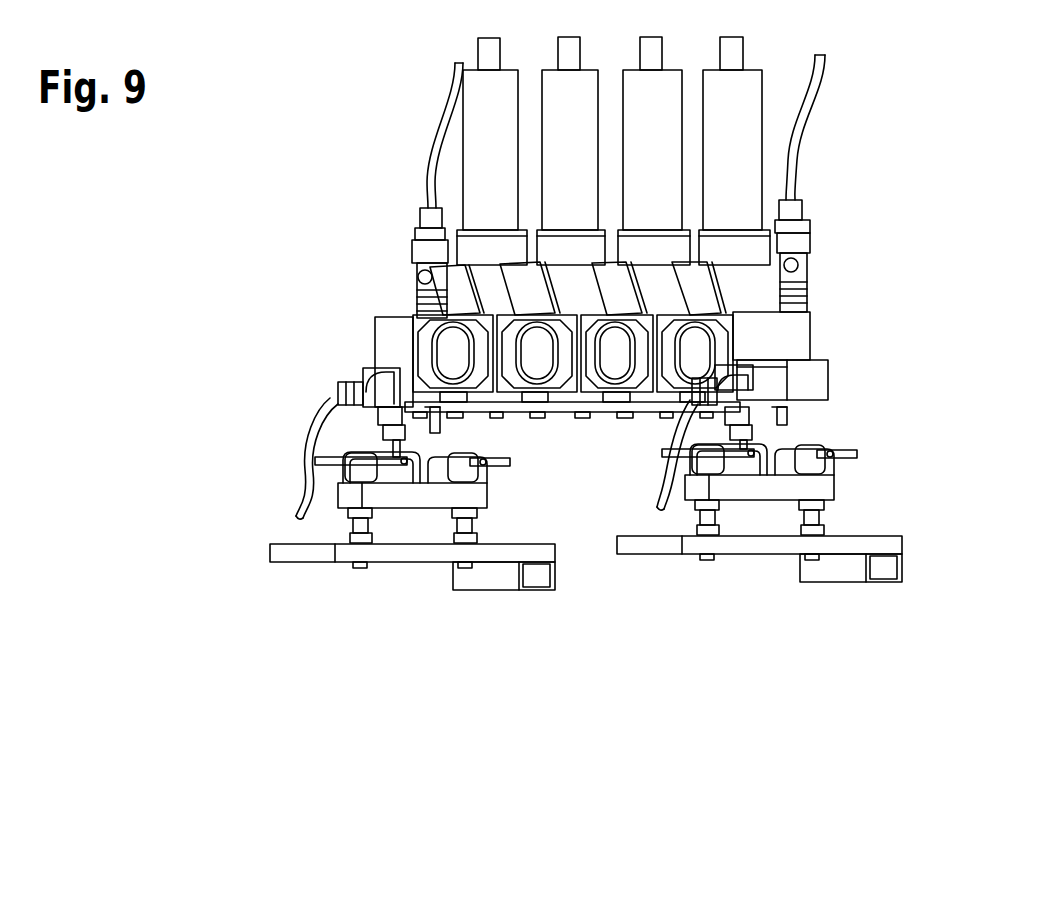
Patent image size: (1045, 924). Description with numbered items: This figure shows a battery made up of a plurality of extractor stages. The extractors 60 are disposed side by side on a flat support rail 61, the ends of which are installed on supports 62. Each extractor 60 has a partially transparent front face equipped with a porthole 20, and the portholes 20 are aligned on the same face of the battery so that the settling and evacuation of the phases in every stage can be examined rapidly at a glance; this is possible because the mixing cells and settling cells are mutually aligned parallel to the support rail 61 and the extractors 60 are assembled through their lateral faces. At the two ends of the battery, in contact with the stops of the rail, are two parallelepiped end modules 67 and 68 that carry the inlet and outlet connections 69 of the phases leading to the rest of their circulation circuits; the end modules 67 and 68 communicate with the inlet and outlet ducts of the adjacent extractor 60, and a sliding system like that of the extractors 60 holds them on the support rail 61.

The extractor 60 is at (546, 33).
The porthole 20 is at (613, 333).
The support rail 61 is at (545, 446).
The support 62 is at (384, 590).
The end module 67 is at (392, 317).
The end module 68 is at (813, 327).
The inlet and outlet connections 69 is at (425, 133).